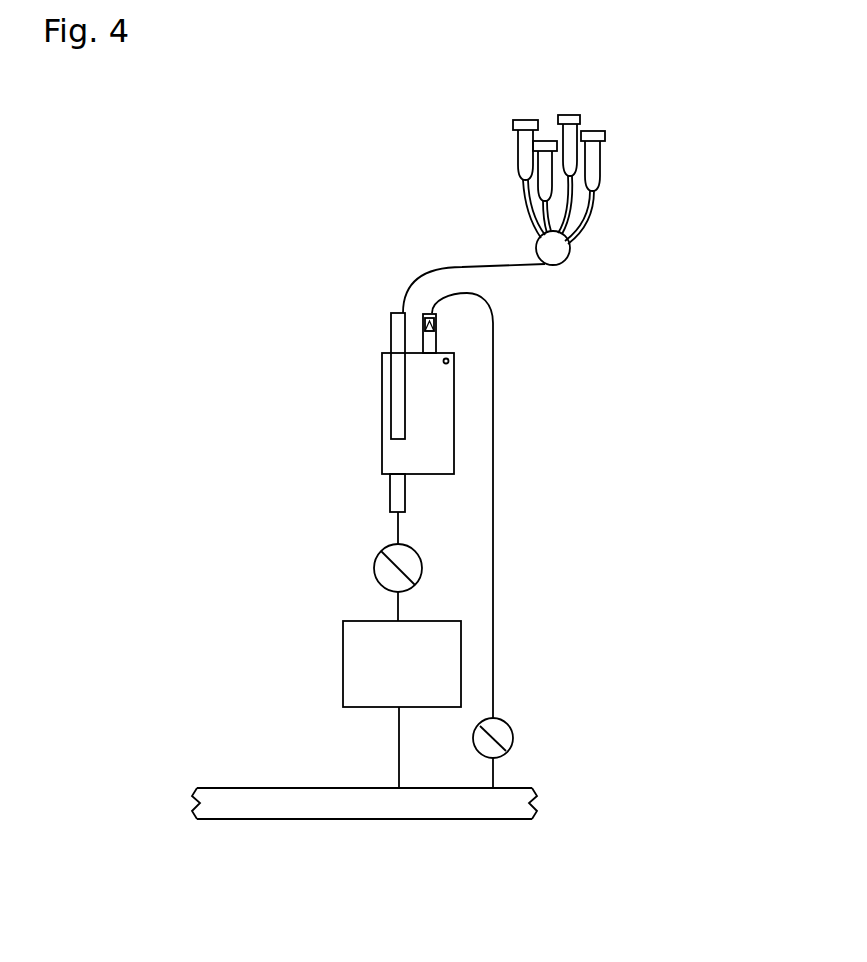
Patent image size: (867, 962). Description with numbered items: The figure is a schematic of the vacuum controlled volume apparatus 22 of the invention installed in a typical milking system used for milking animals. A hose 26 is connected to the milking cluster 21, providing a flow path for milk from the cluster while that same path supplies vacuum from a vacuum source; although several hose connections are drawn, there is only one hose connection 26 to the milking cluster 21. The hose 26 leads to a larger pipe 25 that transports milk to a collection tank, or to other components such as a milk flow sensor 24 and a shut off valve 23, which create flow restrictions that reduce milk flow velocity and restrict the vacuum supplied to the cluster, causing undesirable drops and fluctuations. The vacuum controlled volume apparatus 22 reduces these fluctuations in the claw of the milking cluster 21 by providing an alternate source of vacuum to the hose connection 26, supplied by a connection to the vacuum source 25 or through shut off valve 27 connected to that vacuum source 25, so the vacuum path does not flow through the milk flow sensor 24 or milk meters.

The milking cluster 21 is at (608, 223).
The vacuum controlled volume apparatus 22 is at (372, 382).
The shut off valve 23 is at (362, 563).
The milk flow sensor 24 is at (384, 678).
The larger pipe / vacuum source 25 is at (332, 778).
The hose 26 is at (472, 265).
The shut off valve 27 is at (502, 718).